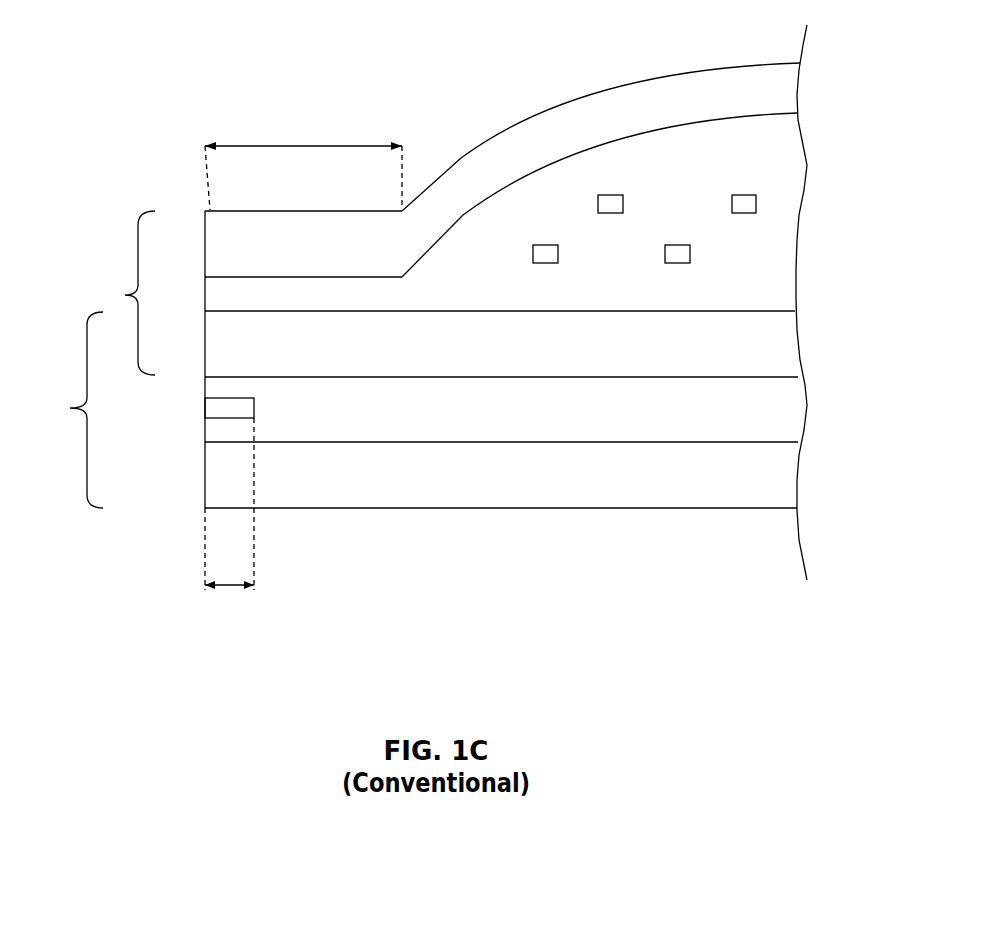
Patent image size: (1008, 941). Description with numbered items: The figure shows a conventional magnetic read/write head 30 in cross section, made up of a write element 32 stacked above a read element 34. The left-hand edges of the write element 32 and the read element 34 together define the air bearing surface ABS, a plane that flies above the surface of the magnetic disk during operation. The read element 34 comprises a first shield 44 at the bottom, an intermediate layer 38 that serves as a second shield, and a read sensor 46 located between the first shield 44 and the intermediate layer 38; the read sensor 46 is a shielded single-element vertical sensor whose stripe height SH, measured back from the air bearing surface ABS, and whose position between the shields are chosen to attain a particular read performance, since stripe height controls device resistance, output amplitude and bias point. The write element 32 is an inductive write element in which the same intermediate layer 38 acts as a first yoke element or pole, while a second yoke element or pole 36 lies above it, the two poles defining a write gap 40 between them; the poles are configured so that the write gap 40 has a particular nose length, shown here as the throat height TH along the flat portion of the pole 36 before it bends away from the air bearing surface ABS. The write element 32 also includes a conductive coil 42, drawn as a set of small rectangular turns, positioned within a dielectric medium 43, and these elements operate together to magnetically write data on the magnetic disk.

The magnetic read/write head 30 is at (502, 33).
The write element 32 is at (122, 293).
The read element 34 is at (69, 410).
The second yoke element or pole 36 is at (683, 78).
The intermediate layer 38 is at (785, 337).
The write gap 40 is at (212, 297).
The conductive coil 42 is at (756, 203).
The dielectric medium 43 is at (787, 247).
The first shield 44 is at (640, 495).
The read sensor 46 is at (204, 407).
The throat height TH is at (300, 147).
The shield height SH is at (230, 590).
The air bearing surface ABS is at (205, 214).